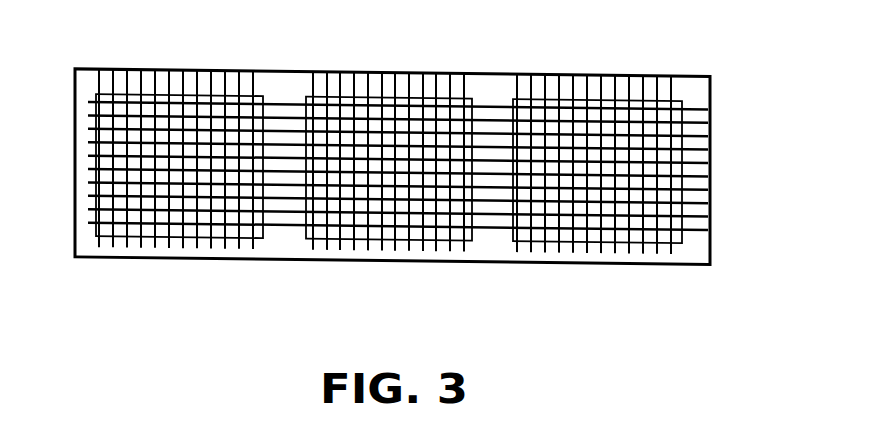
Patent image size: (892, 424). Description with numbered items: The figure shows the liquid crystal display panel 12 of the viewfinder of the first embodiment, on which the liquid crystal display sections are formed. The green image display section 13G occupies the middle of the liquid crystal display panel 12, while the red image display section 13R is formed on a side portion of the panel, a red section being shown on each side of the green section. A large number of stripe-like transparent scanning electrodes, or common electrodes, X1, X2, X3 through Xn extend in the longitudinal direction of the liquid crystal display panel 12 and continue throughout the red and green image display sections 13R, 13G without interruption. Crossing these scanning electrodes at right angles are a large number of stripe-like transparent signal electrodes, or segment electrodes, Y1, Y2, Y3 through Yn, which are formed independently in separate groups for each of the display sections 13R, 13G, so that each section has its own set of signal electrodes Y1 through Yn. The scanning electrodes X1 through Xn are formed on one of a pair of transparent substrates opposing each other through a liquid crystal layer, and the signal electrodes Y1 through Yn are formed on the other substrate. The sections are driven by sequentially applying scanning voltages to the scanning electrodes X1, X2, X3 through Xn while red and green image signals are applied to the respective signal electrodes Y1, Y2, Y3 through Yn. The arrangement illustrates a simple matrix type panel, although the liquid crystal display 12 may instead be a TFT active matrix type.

The liquid crystal display panel 12 is at (700, 77).
The red image display section 13R is at (97, 236).
The green image display section 13G is at (303, 235).
The scanning electrode X1 is at (709, 109).
The scanning electrode X2 is at (709, 122).
The scanning electrode X3 is at (709, 139).
The scanning electrode Xn is at (709, 236).
The signal electrode Y1 is at (99, 75).
The signal electrode Y2 is at (114, 73).
The signal electrode Y3 is at (131, 75).
The signal electrode Yn is at (255, 76).